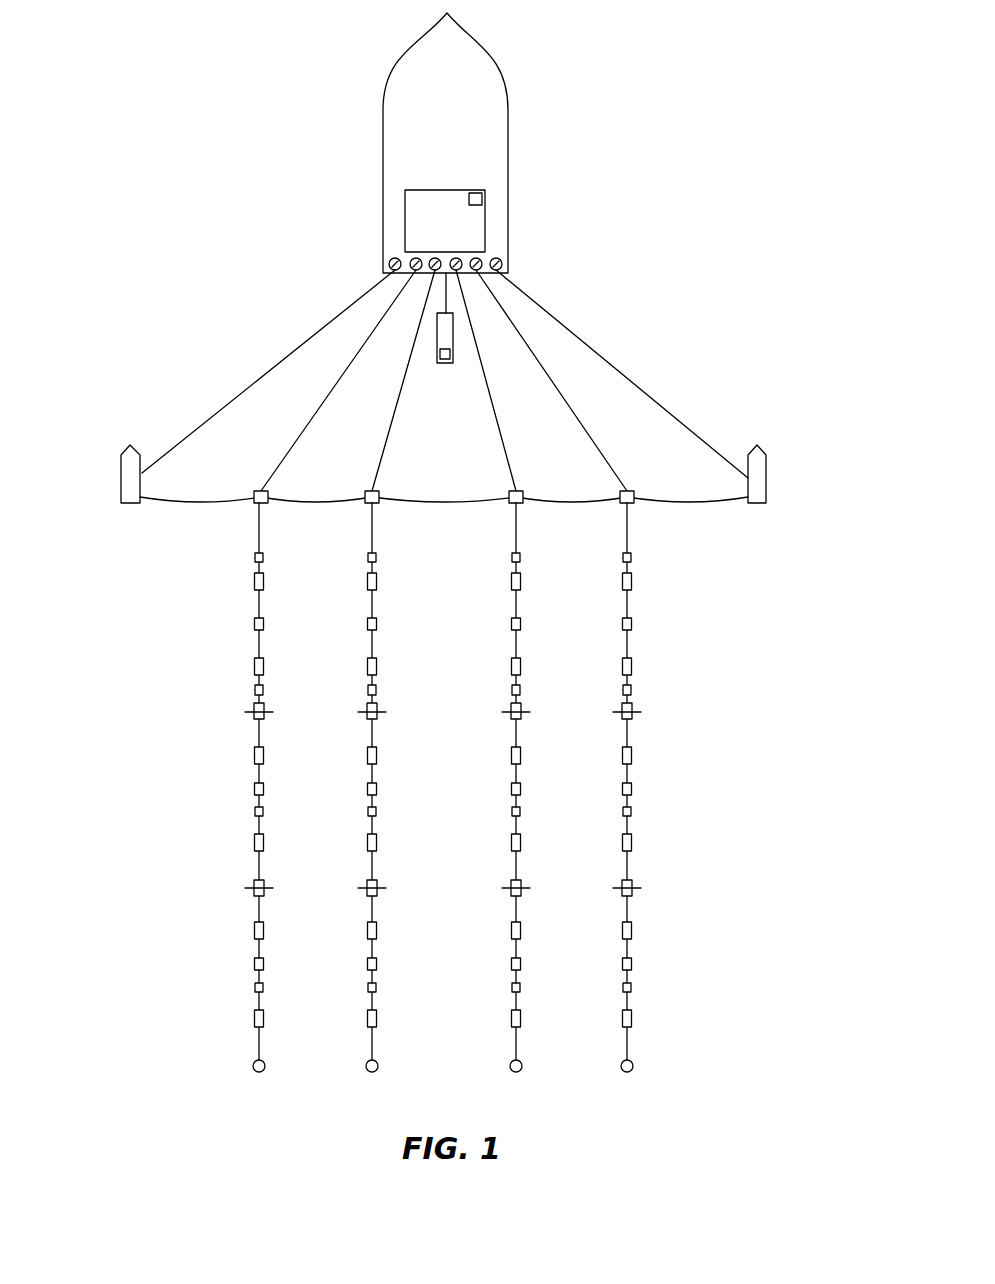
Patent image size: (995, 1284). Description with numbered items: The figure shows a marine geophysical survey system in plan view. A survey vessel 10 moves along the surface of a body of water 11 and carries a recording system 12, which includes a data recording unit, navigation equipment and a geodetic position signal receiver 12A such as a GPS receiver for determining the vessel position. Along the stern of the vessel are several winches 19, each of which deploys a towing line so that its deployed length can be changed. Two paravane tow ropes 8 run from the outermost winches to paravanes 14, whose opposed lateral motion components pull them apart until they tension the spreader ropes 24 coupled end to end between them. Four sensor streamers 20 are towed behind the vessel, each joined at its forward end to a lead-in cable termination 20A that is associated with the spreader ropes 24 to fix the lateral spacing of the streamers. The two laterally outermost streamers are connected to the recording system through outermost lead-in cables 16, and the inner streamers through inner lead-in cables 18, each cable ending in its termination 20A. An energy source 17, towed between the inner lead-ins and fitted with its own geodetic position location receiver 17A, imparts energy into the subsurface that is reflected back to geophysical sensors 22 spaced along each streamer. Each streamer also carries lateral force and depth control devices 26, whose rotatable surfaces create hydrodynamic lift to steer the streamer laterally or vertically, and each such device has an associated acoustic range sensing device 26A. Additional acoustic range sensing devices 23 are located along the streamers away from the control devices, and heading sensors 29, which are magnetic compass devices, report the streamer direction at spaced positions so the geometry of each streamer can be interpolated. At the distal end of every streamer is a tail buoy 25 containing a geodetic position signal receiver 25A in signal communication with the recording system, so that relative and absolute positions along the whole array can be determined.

The paravane tow rope 8 is at (286, 358).
The survey vessel 10 is at (509, 118).
The body of water 11 is at (768, 263).
The recording system 12 is at (467, 226).
The geodetic position signal receiver 12A is at (482, 198).
The paravane 14 is at (121, 478).
The outermost lead-in cable 16 is at (307, 428).
The energy source 17 is at (453, 332).
The geodetic position location receiver 17A is at (453, 352).
The inner lead-in cable 18 is at (390, 428).
The winch 19 is at (456, 258).
The sensor streamer 20 is at (257, 538).
The lead-in cable termination 20A is at (254, 492).
The geophysical sensor 22 is at (254, 581).
The acoustic range sensing device 23 is at (254, 624).
The spreader rope 24 is at (315, 500).
The tail buoy 25 is at (257, 1073).
The geodetic position signal receiver 25A is at (669, 1050).
The lateral force and depth control device 26 is at (254, 690).
The acoustic range sensing device 26A is at (670, 887).
The heading sensor 29 is at (264, 558).